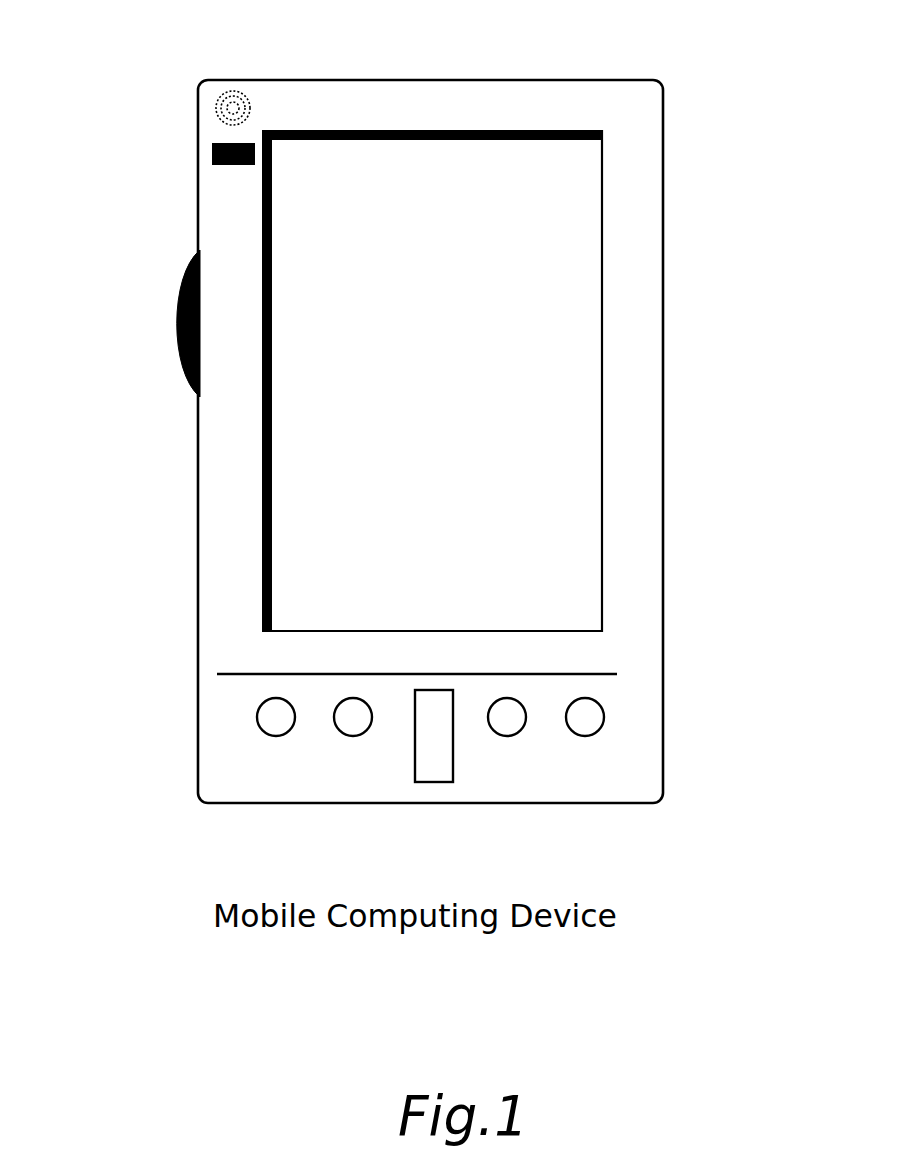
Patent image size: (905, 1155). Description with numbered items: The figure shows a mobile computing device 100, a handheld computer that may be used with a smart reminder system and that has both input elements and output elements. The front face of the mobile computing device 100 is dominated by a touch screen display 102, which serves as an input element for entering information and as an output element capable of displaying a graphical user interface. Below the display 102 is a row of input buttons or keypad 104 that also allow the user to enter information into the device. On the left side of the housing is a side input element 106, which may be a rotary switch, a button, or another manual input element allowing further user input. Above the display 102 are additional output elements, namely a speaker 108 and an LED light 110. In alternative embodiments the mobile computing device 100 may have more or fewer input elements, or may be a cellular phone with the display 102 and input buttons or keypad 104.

The mobile computing device 100 is at (664, 101).
The touch screen display 102 is at (295, 559).
The input buttons or keypad 104 is at (585, 732).
The side input element 106 is at (177, 300).
The speaker 108 is at (213, 108).
The LED light 110 is at (212, 155).